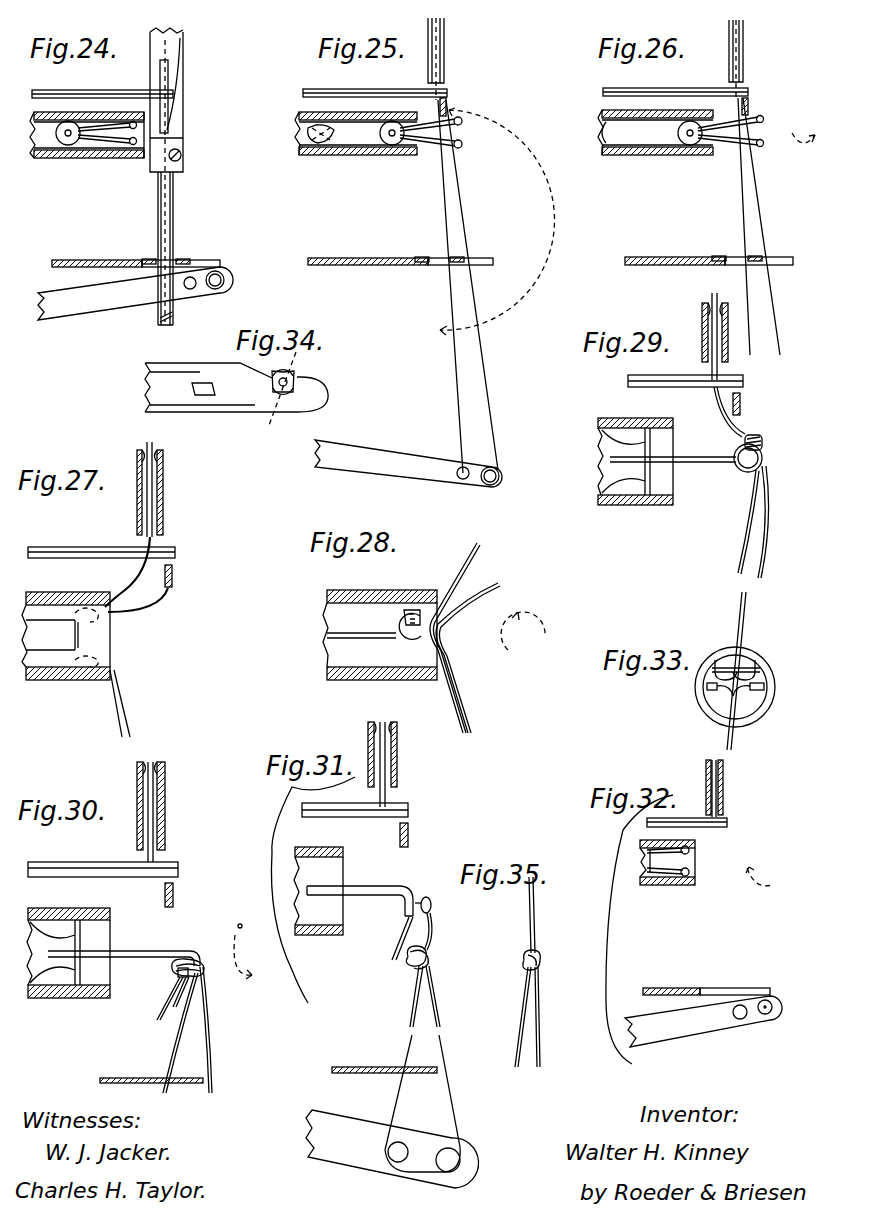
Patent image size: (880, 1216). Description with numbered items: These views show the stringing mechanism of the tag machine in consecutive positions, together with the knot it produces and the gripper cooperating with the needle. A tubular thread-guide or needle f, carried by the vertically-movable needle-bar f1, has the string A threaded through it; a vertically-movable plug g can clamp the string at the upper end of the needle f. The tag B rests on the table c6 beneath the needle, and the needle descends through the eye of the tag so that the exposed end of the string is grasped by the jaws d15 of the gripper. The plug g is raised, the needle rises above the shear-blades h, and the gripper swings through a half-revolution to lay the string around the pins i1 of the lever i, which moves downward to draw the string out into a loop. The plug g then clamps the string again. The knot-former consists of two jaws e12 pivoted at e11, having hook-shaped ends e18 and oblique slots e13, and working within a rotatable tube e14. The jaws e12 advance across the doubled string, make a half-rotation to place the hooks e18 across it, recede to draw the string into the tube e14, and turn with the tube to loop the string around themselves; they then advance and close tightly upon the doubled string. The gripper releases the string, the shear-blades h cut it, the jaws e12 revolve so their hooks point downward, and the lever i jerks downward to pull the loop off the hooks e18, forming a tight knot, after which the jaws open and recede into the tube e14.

In FIG. 24, the string A is at (183, 70).
In FIG. 34, the string A is at (291, 376).
In FIG. 25, the string A is at (493, 286).
In FIG. 26, the string A is at (770, 292).
In FIG. 29, the string A is at (712, 300).
In FIG. 27, the string A is at (130, 586).
In FIG. 28, the string A is at (470, 562).
In FIG. 33, the string A is at (743, 671).
In FIG. 32, the string A is at (689, 912).
In FIG. 30, the string A is at (158, 855).
In FIG. 31, the string A is at (392, 800).
In FIG. 35, the string A is at (538, 922).
In FIG. 24, the tag B is at (182, 260).
In FIG. 25, the tag B is at (430, 258).
In FIG. 26, the tag B is at (730, 257).
In FIG. 30, the tag B is at (151, 1070).
In FIG. 31, the tag B is at (384, 1060).
In FIG. 24, the table c6 is at (96, 260).
In FIG. 25, the table c6 is at (358, 258).
In FIG. 26, the table c6 is at (661, 257).
In FIG. 32, the table c6 is at (706, 981).
In FIG. 24, the jaws of the gripper d15 is at (158, 322).
In FIG. 34, the jaws of the gripper d15 is at (330, 398).
In FIG. 25, the jaws of the gripper d15 is at (448, 100).
In FIG. 26, the jaws of the gripper d15 is at (749, 104).
In FIG. 29, the jaws of the gripper d15 is at (741, 406).
In FIG. 27, the jaws of the gripper d15 is at (173, 576).
In FIG. 30, the jaws of the gripper d15 is at (173, 898).
In FIG. 31, the jaws of the gripper d15 is at (409, 832).
In FIG. 24, the pivot of the knot-former jaws e11 is at (66, 130).
In FIG. 25, the pivot of the knot-former jaws e11 is at (392, 145).
In FIG. 26, the pivot of the knot-former jaws e11 is at (688, 145).
In FIG. 24, the jaws of the knot-former e12 is at (102, 131).
In FIG. 25, the jaws of the knot-former e12 is at (428, 146).
In FIG. 26, the jaws of the knot-former e12 is at (764, 141).
In FIG. 29, the jaws of the knot-former e12 is at (696, 459).
In FIG. 27, the jaws of the knot-former e12 is at (96, 652).
In FIG. 28, the jaws of the knot-former e12 is at (350, 634).
In FIG. 33, the jaws of the knot-former e12 is at (707, 686).
In FIG. 32, the jaws of the knot-former e12 is at (650, 856).
In FIG. 30, the jaws of the knot-former e12 is at (125, 951).
In FIG. 31, the jaws of the knot-former e12 is at (380, 876).
In FIG. 25, the oblique slots e13 is at (318, 145).
In FIG. 24, the tube e14 is at (56, 158).
In FIG. 25, the tube e14 is at (366, 148).
In FIG. 26, the tube e14 is at (648, 148).
In FIG. 29, the tube e14 is at (635, 452).
In FIG. 27, the tube e14 is at (70, 592).
In FIG. 28, the tube e14 is at (375, 592).
In FIG. 33, the tube e14 is at (739, 681).
In FIG. 32, the tube e14 is at (680, 885).
In FIG. 30, the tube e14 is at (68, 944).
In FIG. 31, the tube e14 is at (319, 880).
In FIG. 25, the hook-shaped ends e18 is at (463, 144).
In FIG. 29, the hook-shaped ends e18 is at (763, 437).
In FIG. 28, the hook-shaped ends e18 is at (414, 610).
In FIG. 33, the hook-shaped ends e18 is at (718, 660).
In FIG. 32, the hook-shaped ends e18 is at (690, 871).
In FIG. 30, the hook-shaped ends e18 is at (200, 976).
In FIG. 31, the hook-shaped ends e18 is at (432, 908).
In FIG. 24, the needle f is at (173, 208).
In FIG. 34, the needle f is at (280, 391).
In FIG. 25, the needle f is at (442, 59).
In FIG. 26, the needle f is at (742, 59).
In FIG. 29, the needle f is at (725, 336).
In FIG. 27, the needle f is at (162, 489).
In FIG. 32, the needle f is at (723, 792).
In FIG. 30, the needle f is at (161, 812).
In FIG. 31, the needle f is at (397, 764).
In FIG. 24, the needle-bar f1 is at (183, 36).
In FIG. 24, the plug g is at (172, 106).
In FIG. 24, the shear-blades h is at (104, 100).
In FIG. 25, the shear-blades h is at (390, 104).
In FIG. 26, the shear-blades h is at (670, 102).
In FIG. 29, the shear-blades h is at (684, 395).
In FIG. 27, the shear-blades h is at (106, 570).
In FIG. 32, the shear-blades h is at (687, 822).
In FIG. 30, the shear-blades h is at (178, 866).
In FIG. 31, the shear-blades h is at (408, 810).
In FIG. 24, the lever i is at (135, 293).
In FIG. 25, the lever i is at (408, 463).
In FIG. 32, the lever i is at (703, 1021).
In FIG. 31, the lever i is at (392, 1149).
In FIG. 24, the pins i1 is at (224, 280).
In FIG. 25, the pins i1 is at (487, 470).
In FIG. 32, the pins i1 is at (764, 1016).
In FIG. 31, the pins i1 is at (440, 1156).